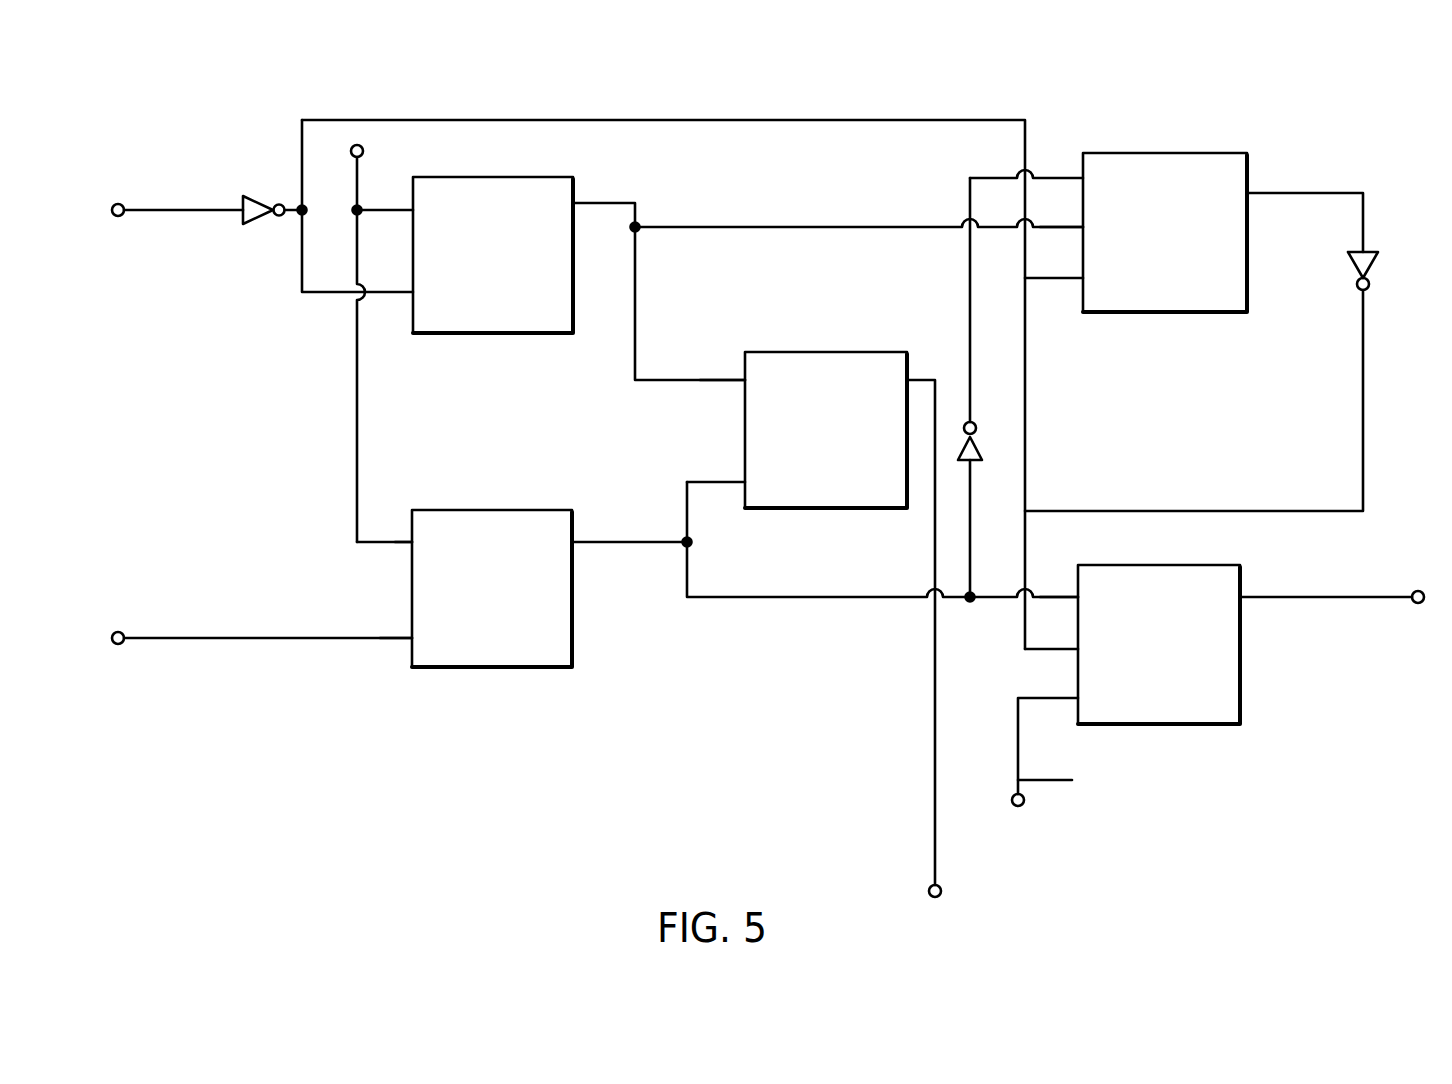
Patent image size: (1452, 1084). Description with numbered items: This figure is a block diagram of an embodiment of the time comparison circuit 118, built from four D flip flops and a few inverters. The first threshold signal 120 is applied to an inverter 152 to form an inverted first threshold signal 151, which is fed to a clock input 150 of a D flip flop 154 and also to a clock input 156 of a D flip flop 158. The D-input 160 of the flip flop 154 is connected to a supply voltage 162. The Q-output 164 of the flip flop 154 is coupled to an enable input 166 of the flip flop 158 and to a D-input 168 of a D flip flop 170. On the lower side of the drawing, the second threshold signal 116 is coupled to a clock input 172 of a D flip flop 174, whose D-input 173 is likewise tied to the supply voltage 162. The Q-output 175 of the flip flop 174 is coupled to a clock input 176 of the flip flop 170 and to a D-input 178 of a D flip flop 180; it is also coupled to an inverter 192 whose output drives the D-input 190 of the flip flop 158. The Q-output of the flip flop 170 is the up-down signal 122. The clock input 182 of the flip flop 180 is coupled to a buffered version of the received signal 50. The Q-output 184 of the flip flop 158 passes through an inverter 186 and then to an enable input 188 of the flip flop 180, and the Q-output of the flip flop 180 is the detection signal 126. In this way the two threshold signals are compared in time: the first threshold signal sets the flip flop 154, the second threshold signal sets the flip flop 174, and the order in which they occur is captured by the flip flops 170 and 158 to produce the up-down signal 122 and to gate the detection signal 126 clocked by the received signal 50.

The time comparison circuit 118 is at (752, 92).
The first threshold signal 120 is at (172, 208).
The inverter 152 is at (248, 222).
The inverted first threshold signal 151 is at (302, 163).
The supply voltage 162 is at (359, 189).
The clock input 150 is at (385, 445).
The D-input 160 is at (413, 193).
The D flip flop 154 is at (482, 177).
The Q-output 164 is at (573, 193).
The D-input 168 is at (745, 368).
The D flip flop 170 is at (770, 352).
The clock input 176 is at (757, 510).
The D-input 173 is at (422, 520).
The D flip flop 174 is at (480, 510).
The Q-output 175 is at (553, 526).
The second threshold signal 116 is at (200, 638).
The clock input 172 is at (412, 650).
The inverter 192 is at (982, 440).
The D-input 190 is at (1098, 168).
The D flip flop 158 is at (1190, 140).
The enable input 166 is at (1085, 235).
The clock input 156 is at (1090, 295).
The Q-output 184 is at (1233, 176).
The inverter 186 is at (1368, 263).
The D-input 178 is at (1085, 580).
The D flip flop 180 is at (1155, 565).
The enable input 188 is at (1085, 665).
The clock input 182 is at (1105, 714).
The received signal 50 is at (1064, 788).
The detection signal 126 is at (1292, 597).
The up-down signal 122 is at (935, 882).